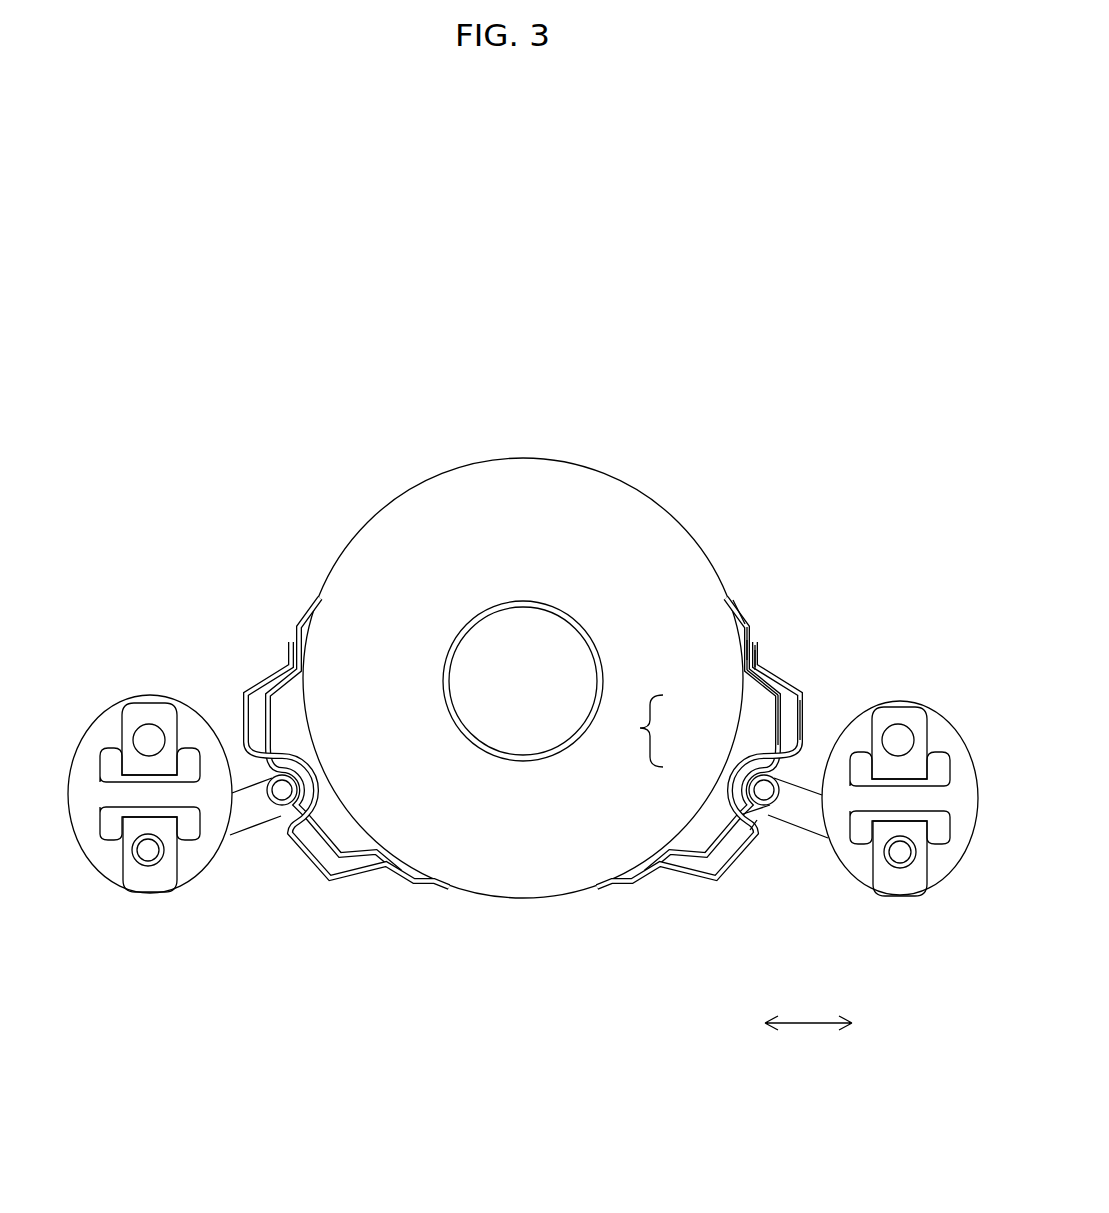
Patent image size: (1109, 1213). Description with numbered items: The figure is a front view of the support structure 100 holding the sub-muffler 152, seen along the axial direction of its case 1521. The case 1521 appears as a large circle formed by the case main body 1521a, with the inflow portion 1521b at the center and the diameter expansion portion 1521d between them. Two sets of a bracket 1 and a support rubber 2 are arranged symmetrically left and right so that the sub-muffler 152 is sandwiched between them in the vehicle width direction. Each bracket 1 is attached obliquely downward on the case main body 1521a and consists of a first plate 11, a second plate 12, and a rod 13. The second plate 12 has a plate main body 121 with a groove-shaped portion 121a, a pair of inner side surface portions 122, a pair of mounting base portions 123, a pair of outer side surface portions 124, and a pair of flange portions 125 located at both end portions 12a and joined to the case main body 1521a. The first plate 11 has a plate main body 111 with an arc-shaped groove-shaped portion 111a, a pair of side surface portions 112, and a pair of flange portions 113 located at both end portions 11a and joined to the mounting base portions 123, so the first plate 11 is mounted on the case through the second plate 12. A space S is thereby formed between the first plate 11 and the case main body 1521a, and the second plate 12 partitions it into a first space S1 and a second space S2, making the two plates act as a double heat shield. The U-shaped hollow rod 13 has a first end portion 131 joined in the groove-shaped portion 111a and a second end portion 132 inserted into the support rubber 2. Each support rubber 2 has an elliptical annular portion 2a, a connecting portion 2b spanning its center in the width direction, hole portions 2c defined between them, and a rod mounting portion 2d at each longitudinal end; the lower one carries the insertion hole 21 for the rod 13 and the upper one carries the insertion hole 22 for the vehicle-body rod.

The support structure 100 is at (542, 967).
The bracket 1 is at (357, 877).
The first plate 11 is at (318, 873).
The end portions of the first plate 11a is at (763, 650).
The second plate 12 is at (415, 887).
The end portions of the second plate 12a is at (740, 610).
The rod 13 is at (529, 857).
The support rubber 2 is at (527, 813).
The annular portion 2a is at (960, 683).
The connecting portion 2b is at (835, 861).
The hole portion 2c is at (918, 797).
The rod mounting portion 2d is at (908, 801).
The insertion hole 21 is at (918, 890).
The insertion hole 22 is at (898, 701).
The plate main body 111 is at (807, 743).
The groove-shaped portion 111a is at (752, 810).
The side surface portions 112 is at (757, 657).
The flange portions 113 is at (835, 637).
The plate main body 121 is at (803, 700).
The groove-shaped portion 121a is at (733, 790).
The inner side surface portions 122 is at (757, 678).
The mounting base portions 123 is at (760, 640).
The outer side surface portions 124 is at (757, 637).
The flange portions 125 is at (771, 564).
The first end portion 131 is at (781, 808).
The second end portion 132 is at (917, 914).
The sub-muffler 152 is at (752, 433).
The case 1521 is at (527, 634).
The case main body 1521a is at (535, 458).
The inflow portion 1521b is at (477, 607).
The diameter expansion portion 1521d is at (492, 525).
The space S is at (705, 729).
The first space S1 is at (790, 730).
The second space S2 is at (763, 743).